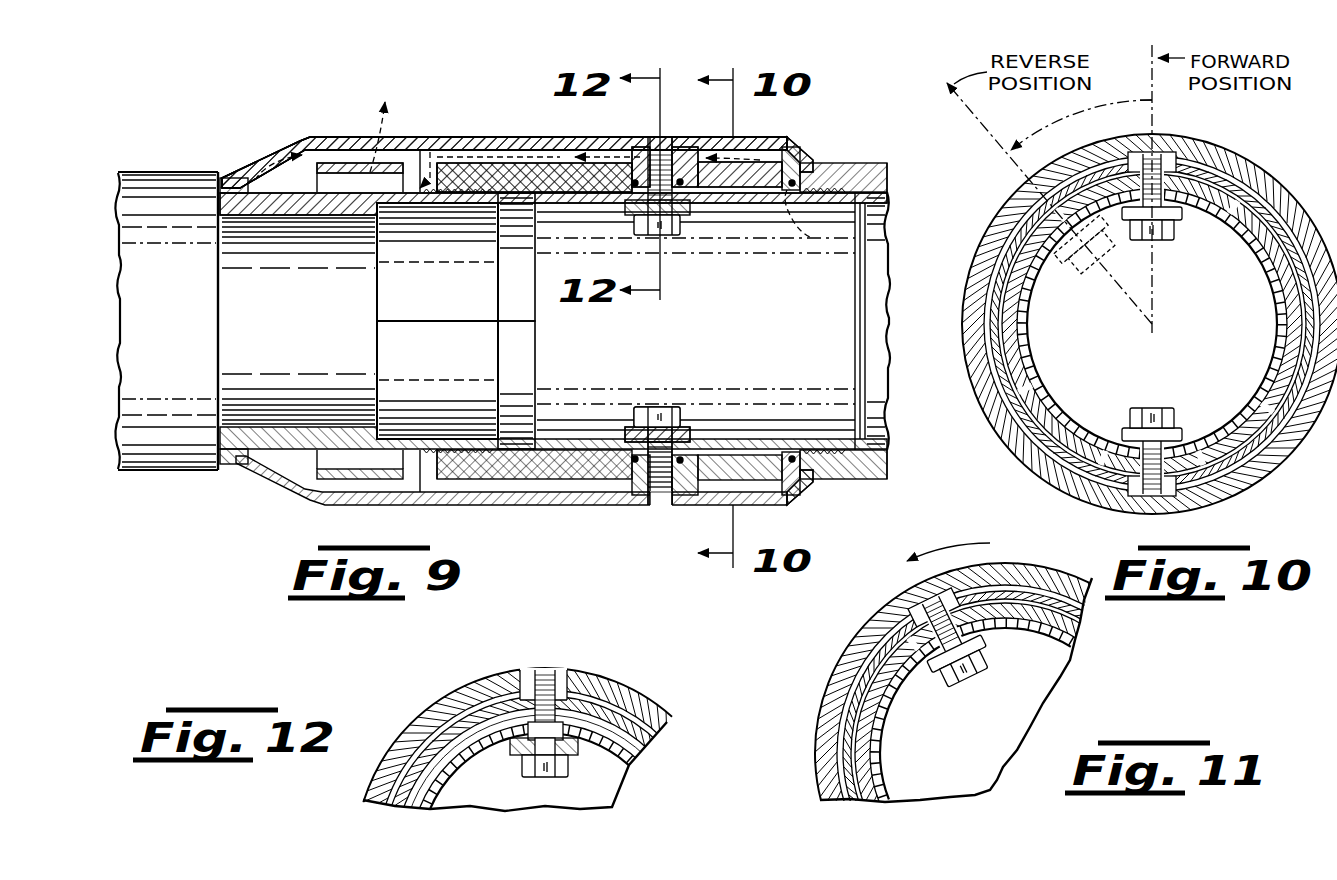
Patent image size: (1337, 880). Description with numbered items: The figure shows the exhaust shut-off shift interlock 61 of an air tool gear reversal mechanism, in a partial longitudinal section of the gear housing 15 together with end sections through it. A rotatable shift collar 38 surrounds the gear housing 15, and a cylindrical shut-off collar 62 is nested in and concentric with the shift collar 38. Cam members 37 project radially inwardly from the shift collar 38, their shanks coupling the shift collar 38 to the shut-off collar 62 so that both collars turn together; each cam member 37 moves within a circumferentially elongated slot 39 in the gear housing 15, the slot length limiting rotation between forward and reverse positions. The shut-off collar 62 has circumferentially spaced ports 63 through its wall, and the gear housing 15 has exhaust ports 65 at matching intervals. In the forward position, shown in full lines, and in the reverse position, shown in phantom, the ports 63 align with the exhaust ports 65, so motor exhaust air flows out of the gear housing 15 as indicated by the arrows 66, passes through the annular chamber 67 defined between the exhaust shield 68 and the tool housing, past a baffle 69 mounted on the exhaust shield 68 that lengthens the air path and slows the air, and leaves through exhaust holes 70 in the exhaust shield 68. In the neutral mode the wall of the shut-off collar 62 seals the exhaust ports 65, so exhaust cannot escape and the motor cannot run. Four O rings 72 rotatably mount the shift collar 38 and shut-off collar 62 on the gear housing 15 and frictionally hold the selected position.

In FIG. 9, the gear housing 15 is at (575, 197).
In FIG. 10, the gear housing 15 is at (1152, 324).
In FIG. 11, the gear housing 15 is at (890, 708).
In FIG. 12, the gear housing 15 is at (436, 788).
In FIG. 9, the cam member 37 is at (663, 441).
In FIG. 10, the cam member 37 is at (1174, 324).
In FIG. 11, the cam member 37 is at (949, 637).
In FIG. 9, the shift collar 38 is at (713, 138).
In FIG. 10, the shift collar 38 is at (1145, 324).
In FIG. 11, the shift collar 38 is at (1005, 721).
In FIG. 12, the shift collar 38 is at (447, 703).
In FIG. 12, the circumferentially elongated slot 39 is at (455, 752).
In FIG. 9, the shut-off shift interlock 61 is at (817, 146).
In FIG. 10, the shut-off shift interlock 61 is at (1298, 176).
In FIG. 9, the shut-off collar 62 is at (799, 148).
In FIG. 10, the shut-off collar 62 is at (1138, 324).
In FIG. 11, the shut-off collar 62 is at (895, 675).
In FIG. 12, the shut-off collar 62 is at (440, 730).
In FIG. 9, the port 63 is at (765, 172).
In FIG. 10, the port 63 is at (1121, 312).
In FIG. 11, the port 63 is at (840, 664).
In FIG. 9, the exhaust port 65 is at (705, 188).
In FIG. 10, the exhaust port 65 is at (1152, 324).
In FIG. 11, the exhaust port 65 is at (885, 733).
In FIG. 9, the arrows 66 is at (806, 238).
In FIG. 9, the annular chamber 67 is at (527, 150).
In FIG. 10, the annular chamber 67 is at (1152, 294).
In FIG. 11, the annular chamber 67 is at (1005, 735).
In FIG. 9, the exhaust shield 68 is at (487, 138).
In FIG. 9, the baffle 69 is at (388, 160).
In FIG. 9, the exhaust hole 70 is at (320, 139).
In FIG. 9, the O ring 72 is at (796, 183).